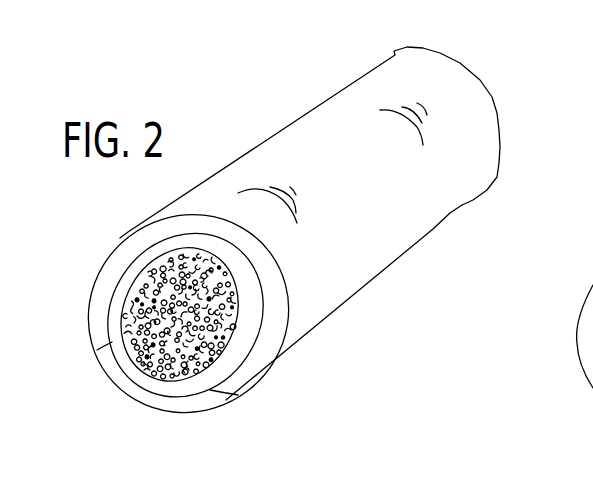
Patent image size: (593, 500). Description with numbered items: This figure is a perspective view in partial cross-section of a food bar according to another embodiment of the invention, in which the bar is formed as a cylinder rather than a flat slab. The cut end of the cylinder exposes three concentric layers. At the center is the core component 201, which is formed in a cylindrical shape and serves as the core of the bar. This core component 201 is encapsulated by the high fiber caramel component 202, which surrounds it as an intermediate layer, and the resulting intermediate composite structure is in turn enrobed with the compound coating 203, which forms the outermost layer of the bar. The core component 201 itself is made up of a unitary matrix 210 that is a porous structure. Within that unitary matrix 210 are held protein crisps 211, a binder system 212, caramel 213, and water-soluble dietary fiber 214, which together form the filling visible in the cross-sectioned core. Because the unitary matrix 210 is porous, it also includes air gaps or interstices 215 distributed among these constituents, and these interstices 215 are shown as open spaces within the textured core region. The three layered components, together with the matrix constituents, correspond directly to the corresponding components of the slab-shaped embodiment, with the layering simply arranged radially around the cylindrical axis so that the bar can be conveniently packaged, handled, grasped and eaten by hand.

The core component 201 is at (233, 290).
The high fiber caramel component 202 is at (230, 253).
The compound coating 203 is at (170, 233).
The unitary matrix 210 is at (132, 353).
The protein crisps 211 is at (140, 360).
The binder system 212 is at (97, 350).
The caramel 213 is at (155, 368).
The water-soluble dietary fiber 214 is at (212, 360).
The air gaps or interstices 215 is at (238, 395).